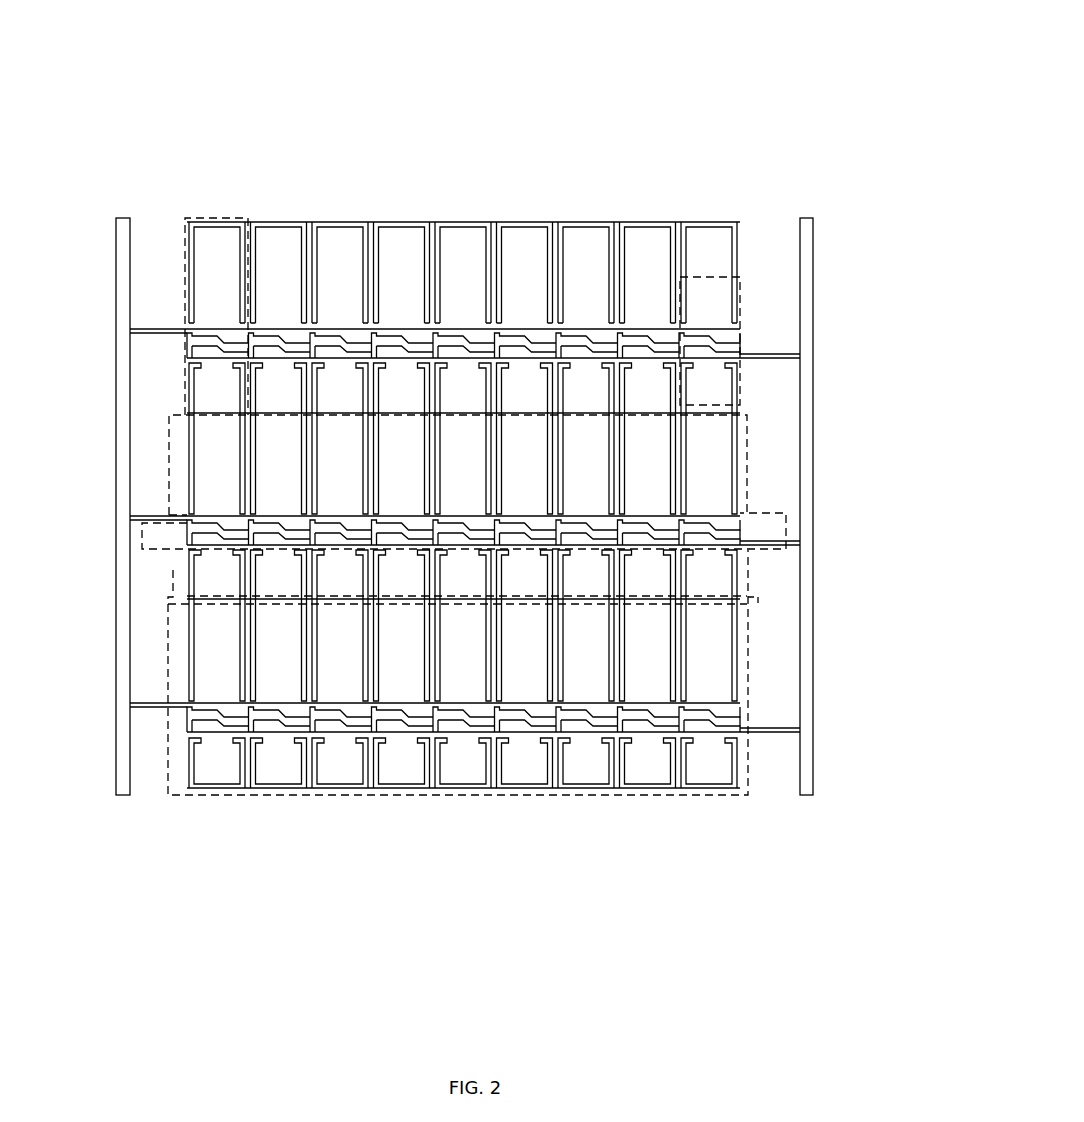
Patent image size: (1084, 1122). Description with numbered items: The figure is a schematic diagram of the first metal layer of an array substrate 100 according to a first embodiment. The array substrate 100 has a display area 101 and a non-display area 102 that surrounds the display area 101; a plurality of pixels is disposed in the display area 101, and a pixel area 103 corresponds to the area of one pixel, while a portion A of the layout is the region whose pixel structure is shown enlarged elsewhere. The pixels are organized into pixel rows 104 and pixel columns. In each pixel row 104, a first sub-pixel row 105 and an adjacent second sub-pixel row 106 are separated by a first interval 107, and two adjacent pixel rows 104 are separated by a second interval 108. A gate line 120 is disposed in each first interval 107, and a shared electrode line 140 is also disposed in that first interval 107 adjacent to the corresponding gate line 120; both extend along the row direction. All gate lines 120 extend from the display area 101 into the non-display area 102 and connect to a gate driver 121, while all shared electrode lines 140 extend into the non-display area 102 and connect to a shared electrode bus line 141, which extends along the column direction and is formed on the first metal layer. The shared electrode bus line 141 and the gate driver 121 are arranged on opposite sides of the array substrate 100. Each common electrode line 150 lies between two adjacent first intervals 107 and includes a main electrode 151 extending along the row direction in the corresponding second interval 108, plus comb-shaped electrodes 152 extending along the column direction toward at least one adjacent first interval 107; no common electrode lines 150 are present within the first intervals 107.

The array substrate 100 is at (195, 62).
The display area 101 is at (187, 826).
The non-display area 102 is at (112, 826).
The pixel area 103 is at (232, 218).
The pixel row 104 is at (168, 657).
The first sub-pixel row 105 is at (168, 450).
The second sub-pixel row 106 is at (173, 570).
The first interval 107 is at (772, 550).
The second interval 108 is at (757, 604).
The gate line 120 is at (727, 357).
The gate driver 121 is at (813, 272).
The shared electrode line 140 is at (723, 337).
The shared electrode bus line 141 is at (117, 232).
The common electrode line 150 is at (900, 450).
The main electrode 151 is at (733, 415).
The comb-shaped electrode 152 is at (732, 462).
The portion A is at (741, 297).